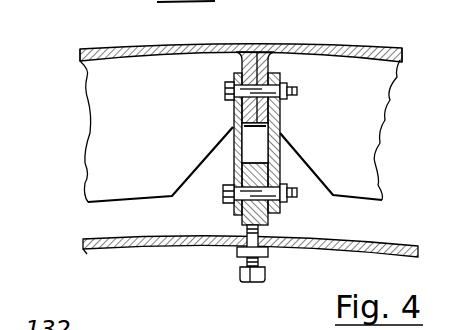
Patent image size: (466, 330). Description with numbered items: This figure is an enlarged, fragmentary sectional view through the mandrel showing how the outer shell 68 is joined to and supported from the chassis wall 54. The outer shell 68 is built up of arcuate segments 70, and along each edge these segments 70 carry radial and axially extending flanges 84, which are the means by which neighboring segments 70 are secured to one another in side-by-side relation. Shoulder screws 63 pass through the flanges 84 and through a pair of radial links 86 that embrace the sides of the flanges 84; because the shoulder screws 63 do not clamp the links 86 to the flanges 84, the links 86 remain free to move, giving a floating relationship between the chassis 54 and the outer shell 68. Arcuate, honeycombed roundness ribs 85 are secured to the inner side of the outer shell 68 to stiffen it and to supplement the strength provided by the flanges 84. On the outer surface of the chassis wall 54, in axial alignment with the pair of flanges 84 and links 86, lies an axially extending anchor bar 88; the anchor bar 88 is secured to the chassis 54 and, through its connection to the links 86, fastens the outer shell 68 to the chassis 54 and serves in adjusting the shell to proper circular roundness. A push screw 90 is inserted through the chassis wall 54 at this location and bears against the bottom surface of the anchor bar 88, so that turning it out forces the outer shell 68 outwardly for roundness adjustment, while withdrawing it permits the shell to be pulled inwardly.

The outer shell 68 is at (295, 32).
The arcuate segment 70 is at (80, 51).
The shoulder screw 63 is at (226, 88).
The flange 84 is at (234, 112).
The radial link 86 is at (232, 150).
The roundness rib 85 is at (88, 202).
The anchor bar 88 is at (279, 217).
The chassis wall 54 is at (112, 250).
The push screw 90 is at (239, 272).